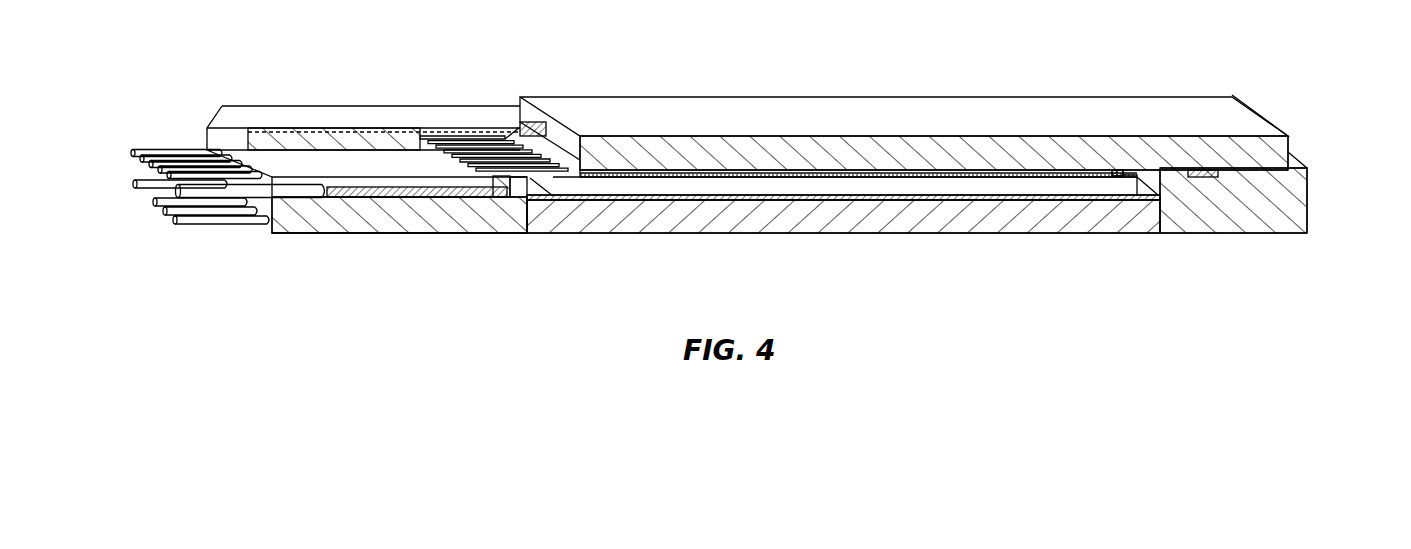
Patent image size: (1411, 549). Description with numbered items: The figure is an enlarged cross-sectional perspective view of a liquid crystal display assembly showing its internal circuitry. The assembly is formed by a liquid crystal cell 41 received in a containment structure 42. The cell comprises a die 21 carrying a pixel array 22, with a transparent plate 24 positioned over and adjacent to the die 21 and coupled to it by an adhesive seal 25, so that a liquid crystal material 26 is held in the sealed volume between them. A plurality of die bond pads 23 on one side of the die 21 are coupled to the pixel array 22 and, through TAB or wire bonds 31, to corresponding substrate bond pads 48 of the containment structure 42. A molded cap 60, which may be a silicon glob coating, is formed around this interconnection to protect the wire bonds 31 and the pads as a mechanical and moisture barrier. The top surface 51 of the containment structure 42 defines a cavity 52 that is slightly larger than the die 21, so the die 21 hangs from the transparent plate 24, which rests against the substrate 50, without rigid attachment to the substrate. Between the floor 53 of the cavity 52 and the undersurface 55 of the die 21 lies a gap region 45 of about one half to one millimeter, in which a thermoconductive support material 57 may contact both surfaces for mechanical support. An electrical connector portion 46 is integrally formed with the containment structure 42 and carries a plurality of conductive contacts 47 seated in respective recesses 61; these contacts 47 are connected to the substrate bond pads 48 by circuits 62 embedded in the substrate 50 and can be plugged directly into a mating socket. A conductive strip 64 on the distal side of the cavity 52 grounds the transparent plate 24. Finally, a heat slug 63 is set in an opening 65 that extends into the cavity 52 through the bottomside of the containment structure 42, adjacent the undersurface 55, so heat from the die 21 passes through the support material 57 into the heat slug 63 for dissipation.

The die 21 is at (1075, 186).
The pixel array 22 is at (882, 176).
The die bond pads 23 is at (547, 108).
The transparent plate 24 is at (1288, 152).
The adhesive seal 25 is at (577, 108).
The liquid crystal material 26 is at (770, 177).
The wire bonds 31 is at (488, 108).
The liquid crystal cell 41 is at (993, 93).
The containment structure 42 is at (1240, 233).
The gap region 45 is at (672, 200).
The electrical connector portion 46 is at (300, 238).
The conductive contacts 47 is at (195, 224).
The substrate bond pads 48 is at (455, 128).
The substrate 50 is at (478, 205).
The top surface 51 is at (1255, 168).
The cavity 52 is at (1145, 177).
The floor 53 is at (908, 178).
The undersurface 55 is at (840, 176).
The support material 57 is at (945, 199).
The molded cap 60 is at (272, 107).
The recesses 61 is at (325, 200).
The circuits 62 is at (417, 192).
The heat slug 63 is at (603, 232).
The conductive strip 64 is at (1210, 170).
The opening 65 is at (533, 197).